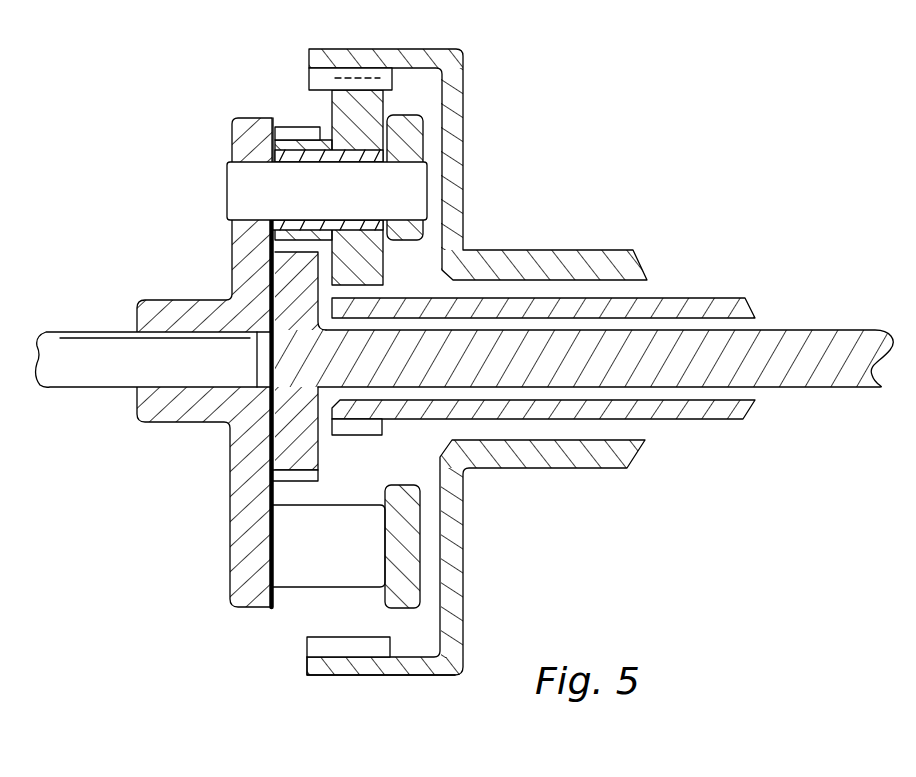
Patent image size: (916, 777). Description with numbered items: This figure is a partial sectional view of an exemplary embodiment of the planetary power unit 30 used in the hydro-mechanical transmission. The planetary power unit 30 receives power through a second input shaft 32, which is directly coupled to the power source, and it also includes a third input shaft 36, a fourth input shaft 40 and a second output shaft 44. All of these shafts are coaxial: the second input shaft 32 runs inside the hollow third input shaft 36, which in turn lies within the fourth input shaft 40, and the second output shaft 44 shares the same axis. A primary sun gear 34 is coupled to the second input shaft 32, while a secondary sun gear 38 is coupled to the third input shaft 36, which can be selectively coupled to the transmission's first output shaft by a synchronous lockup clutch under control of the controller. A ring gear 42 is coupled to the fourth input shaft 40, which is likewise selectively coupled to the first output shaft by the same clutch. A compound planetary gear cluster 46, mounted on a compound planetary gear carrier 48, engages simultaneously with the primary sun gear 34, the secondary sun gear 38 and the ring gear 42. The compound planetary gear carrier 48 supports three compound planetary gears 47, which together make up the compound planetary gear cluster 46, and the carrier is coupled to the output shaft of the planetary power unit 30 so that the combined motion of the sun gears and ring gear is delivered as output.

The planetary power unit 30 is at (770, 72).
The second input shaft 32 is at (815, 387).
The primary sun gear 34 is at (293, 485).
The third input shaft 36 is at (700, 298).
The secondary sun gear 38 is at (370, 435).
The fourth input shaft 40 is at (587, 470).
The ring gear 42 is at (307, 662).
The second output shaft 44 is at (100, 388).
The compound planetary gear cluster 46 is at (283, 95).
The compound planetary gear 47 is at (383, 95).
The compound planetary gear carrier 48 is at (232, 260).